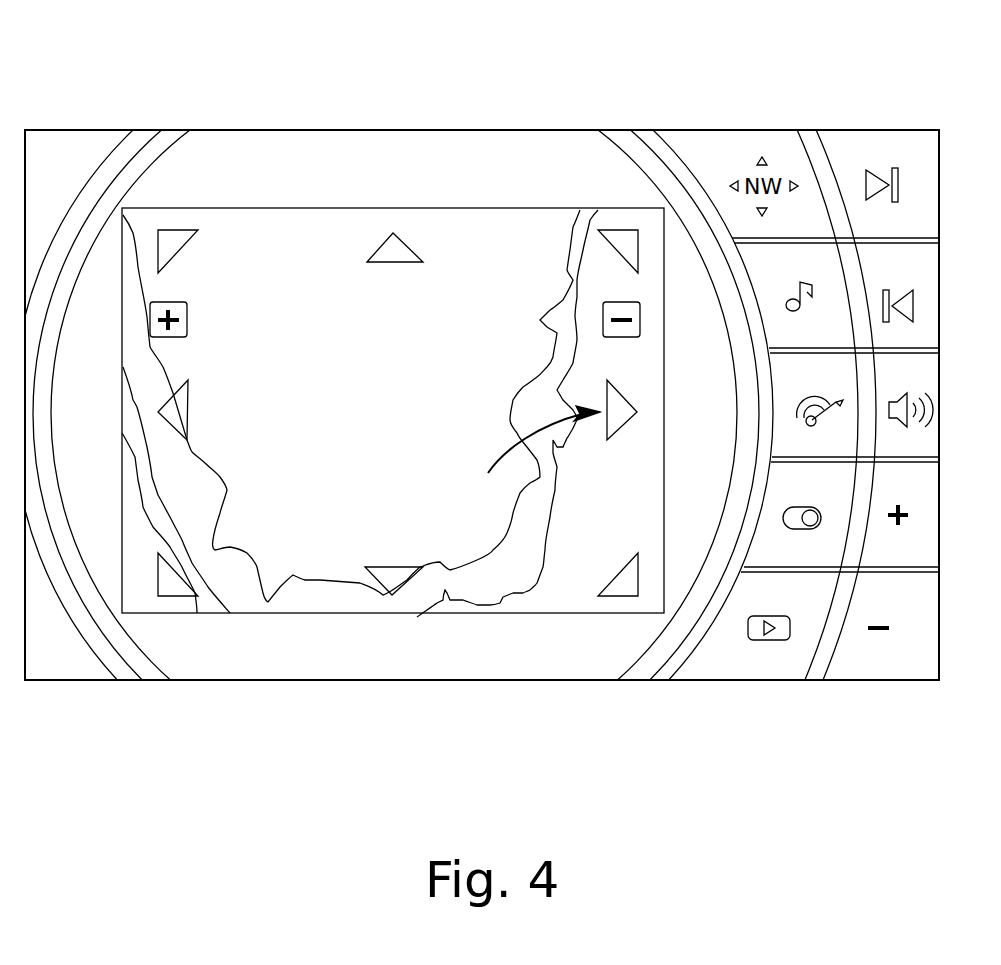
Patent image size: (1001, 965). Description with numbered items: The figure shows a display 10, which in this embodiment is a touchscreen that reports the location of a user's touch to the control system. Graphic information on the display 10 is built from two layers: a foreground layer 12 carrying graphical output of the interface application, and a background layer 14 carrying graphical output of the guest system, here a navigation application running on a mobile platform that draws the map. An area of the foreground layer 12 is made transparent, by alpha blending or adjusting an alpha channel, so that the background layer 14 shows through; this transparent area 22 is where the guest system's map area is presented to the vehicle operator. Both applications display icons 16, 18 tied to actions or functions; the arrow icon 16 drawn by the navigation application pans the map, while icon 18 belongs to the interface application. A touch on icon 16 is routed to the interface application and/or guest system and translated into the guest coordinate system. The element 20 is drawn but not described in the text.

The in-vehicle information system 10 is at (703, 718).
The circular bezel ring 12 is at (188, 672).
The map display 14 is at (468, 373).
The swipe gesture arrow 16 is at (538, 453).
The housing 18 is at (850, 130).
The lower frame edge 20 is at (435, 683).
The corner control triangle 22 is at (145, 603).